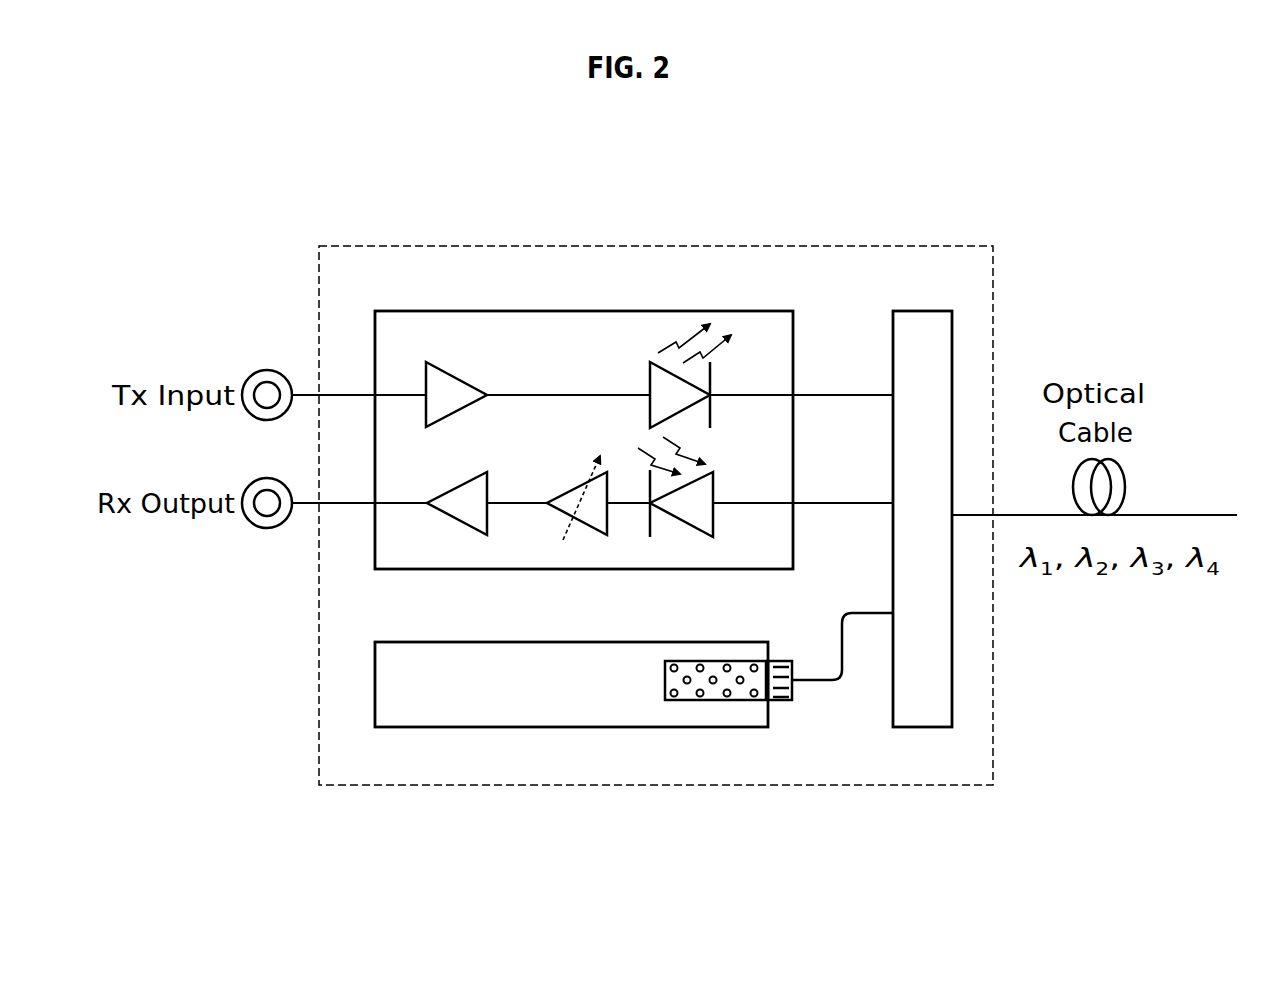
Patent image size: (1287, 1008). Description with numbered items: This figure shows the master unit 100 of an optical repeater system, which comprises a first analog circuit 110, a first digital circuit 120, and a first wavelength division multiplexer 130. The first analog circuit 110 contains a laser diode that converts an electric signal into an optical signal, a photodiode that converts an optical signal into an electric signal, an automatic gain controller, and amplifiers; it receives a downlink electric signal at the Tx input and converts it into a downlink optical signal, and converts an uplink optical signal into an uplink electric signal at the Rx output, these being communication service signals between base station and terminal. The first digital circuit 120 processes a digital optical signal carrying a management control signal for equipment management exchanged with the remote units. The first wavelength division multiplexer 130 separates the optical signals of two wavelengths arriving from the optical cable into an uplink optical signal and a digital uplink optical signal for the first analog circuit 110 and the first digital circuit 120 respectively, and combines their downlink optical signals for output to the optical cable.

The master unit 100 is at (882, 246).
The first analog circuit 110 is at (746, 311).
The first digital circuit 120 is at (568, 727).
The first wavelength division multiplexer 130 is at (952, 667).